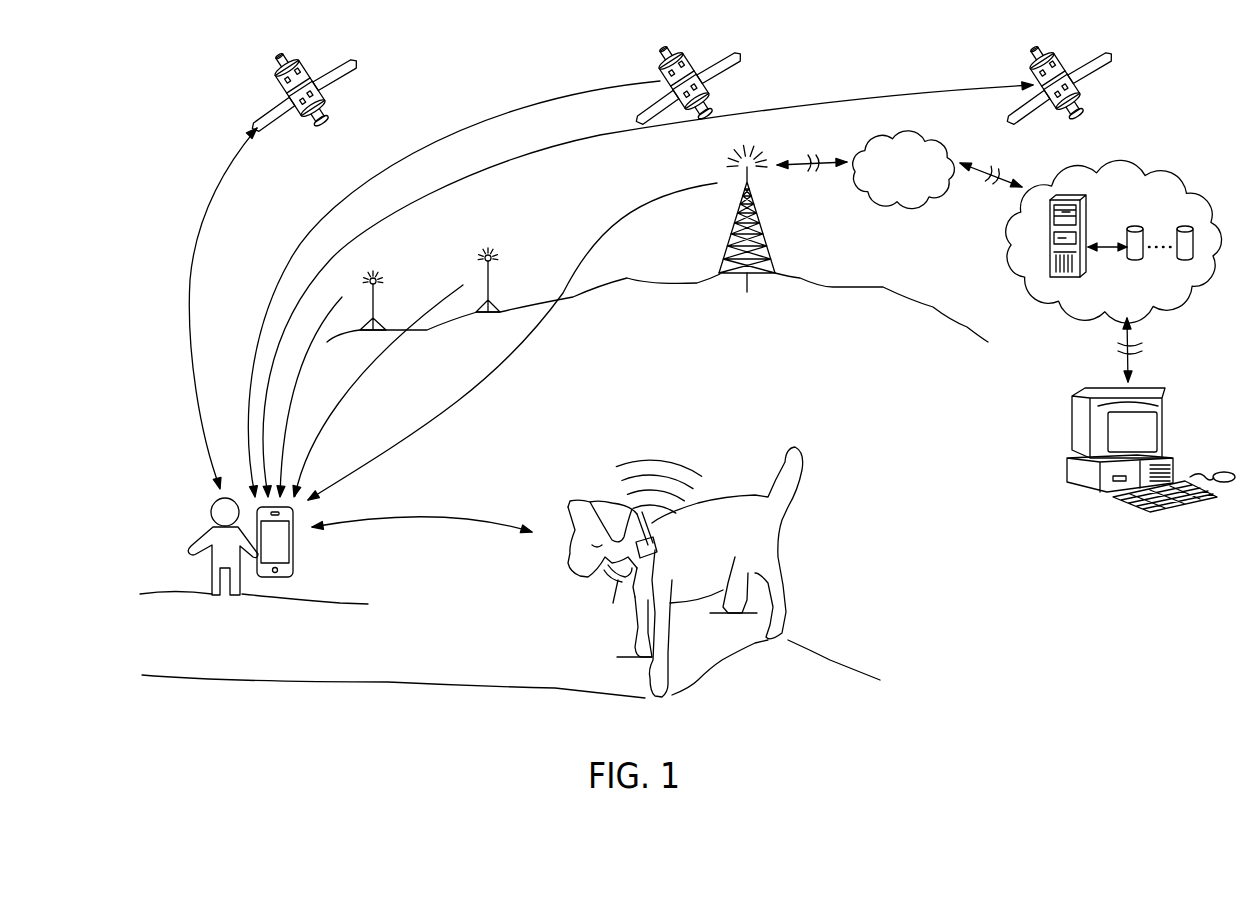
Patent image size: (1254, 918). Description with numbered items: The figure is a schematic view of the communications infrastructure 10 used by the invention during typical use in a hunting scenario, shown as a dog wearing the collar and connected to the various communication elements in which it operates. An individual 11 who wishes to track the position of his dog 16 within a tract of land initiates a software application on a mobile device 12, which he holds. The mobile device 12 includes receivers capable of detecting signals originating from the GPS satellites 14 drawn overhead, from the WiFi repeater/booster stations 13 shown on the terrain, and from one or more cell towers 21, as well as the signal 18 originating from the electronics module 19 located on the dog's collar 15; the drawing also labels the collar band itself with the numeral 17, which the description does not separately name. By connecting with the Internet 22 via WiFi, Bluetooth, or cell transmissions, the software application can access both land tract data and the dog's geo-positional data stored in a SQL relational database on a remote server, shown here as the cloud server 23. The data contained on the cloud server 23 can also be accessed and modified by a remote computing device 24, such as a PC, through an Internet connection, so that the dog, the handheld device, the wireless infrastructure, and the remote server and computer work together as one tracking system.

The communications infrastructure 10 is at (183, 135).
The individual 11 is at (208, 537).
The mobile device 12 is at (293, 553).
The WiFi repeater/booster stations 13 is at (375, 300).
The GPS satellites 14 is at (316, 70).
The collar 15 is at (603, 580).
The dog 16 is at (772, 533).
The collar 17 is at (622, 575).
The signal 18 is at (612, 473).
The electronics module 19 is at (657, 550).
The cell towers 21 is at (770, 204).
The Internet 22 is at (907, 203).
The cloud server 23 is at (1147, 182).
The remote computing device 24 is at (1073, 427).